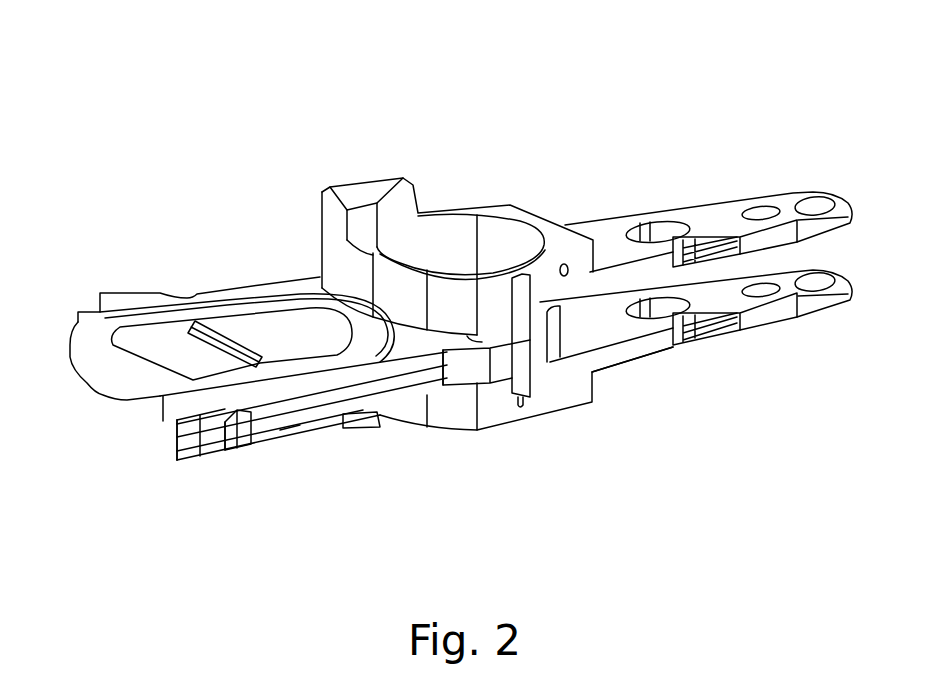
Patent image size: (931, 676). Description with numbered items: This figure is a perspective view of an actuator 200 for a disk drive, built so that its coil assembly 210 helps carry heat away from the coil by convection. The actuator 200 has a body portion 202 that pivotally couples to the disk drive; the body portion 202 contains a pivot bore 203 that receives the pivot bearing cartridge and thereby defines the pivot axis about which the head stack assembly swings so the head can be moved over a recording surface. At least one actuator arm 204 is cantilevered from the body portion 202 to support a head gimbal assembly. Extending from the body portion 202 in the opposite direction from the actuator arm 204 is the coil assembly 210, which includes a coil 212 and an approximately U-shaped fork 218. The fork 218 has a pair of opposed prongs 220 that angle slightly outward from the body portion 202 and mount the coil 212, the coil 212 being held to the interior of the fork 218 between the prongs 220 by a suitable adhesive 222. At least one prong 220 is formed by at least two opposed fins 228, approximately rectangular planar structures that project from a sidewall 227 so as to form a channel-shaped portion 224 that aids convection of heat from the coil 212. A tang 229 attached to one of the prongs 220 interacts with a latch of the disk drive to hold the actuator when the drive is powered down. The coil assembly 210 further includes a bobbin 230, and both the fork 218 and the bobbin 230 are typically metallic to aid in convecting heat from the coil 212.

The actuator 200 is at (777, 31).
The body portion 202 is at (510, 207).
The pivot bore 203 is at (458, 250).
The actuator arm 204 is at (629, 200).
The coil assembly 210 is at (285, 264).
The coil 212 is at (92, 338).
The fork 218 is at (412, 343).
The prongs 220 is at (200, 297).
The adhesive 222 is at (213, 394).
The channel-shaped portion 224 is at (316, 408).
The sidewall 227 is at (174, 448).
The fins 228 is at (267, 420).
The tang 229 is at (238, 437).
The bobbin 230 is at (263, 336).